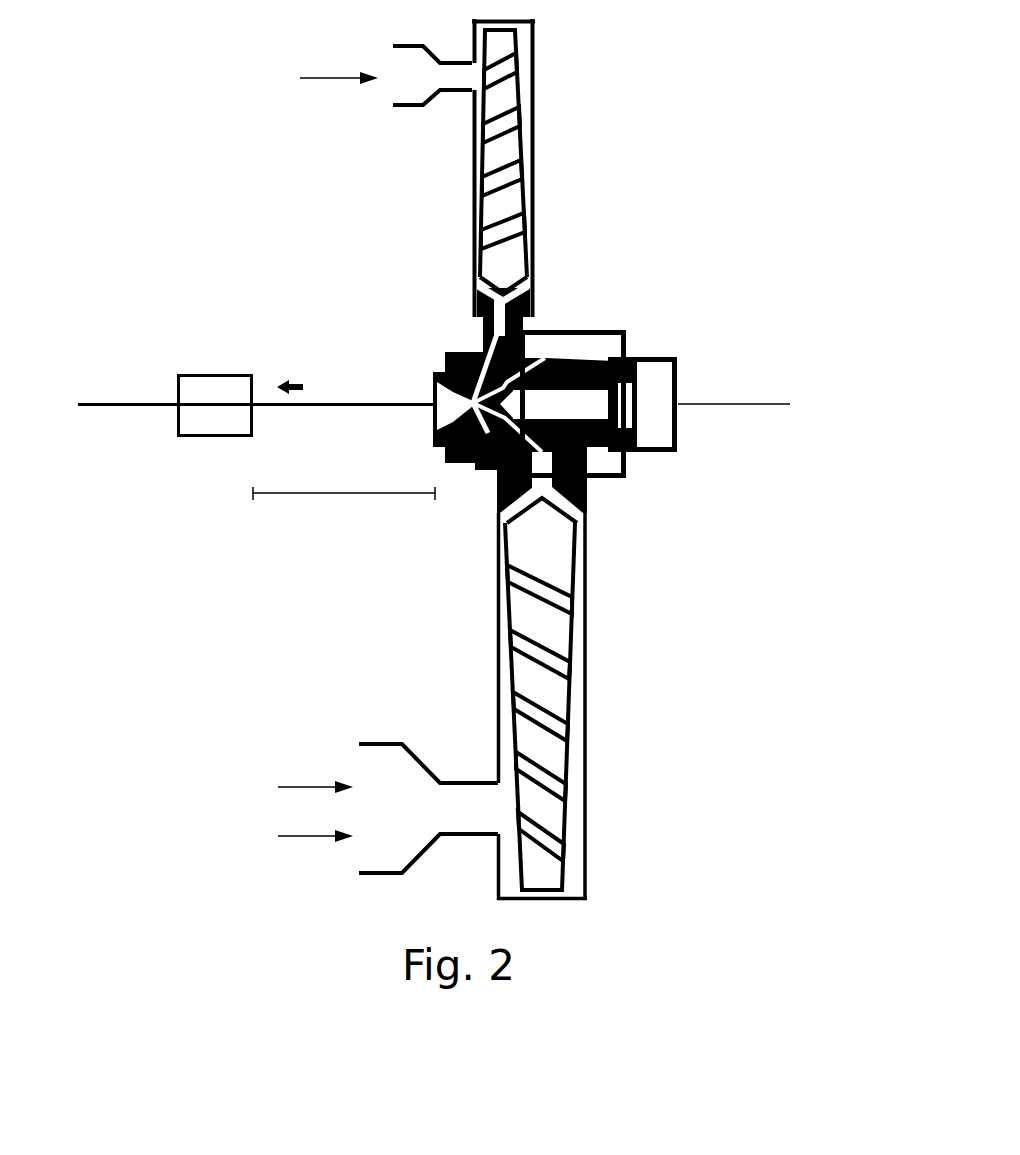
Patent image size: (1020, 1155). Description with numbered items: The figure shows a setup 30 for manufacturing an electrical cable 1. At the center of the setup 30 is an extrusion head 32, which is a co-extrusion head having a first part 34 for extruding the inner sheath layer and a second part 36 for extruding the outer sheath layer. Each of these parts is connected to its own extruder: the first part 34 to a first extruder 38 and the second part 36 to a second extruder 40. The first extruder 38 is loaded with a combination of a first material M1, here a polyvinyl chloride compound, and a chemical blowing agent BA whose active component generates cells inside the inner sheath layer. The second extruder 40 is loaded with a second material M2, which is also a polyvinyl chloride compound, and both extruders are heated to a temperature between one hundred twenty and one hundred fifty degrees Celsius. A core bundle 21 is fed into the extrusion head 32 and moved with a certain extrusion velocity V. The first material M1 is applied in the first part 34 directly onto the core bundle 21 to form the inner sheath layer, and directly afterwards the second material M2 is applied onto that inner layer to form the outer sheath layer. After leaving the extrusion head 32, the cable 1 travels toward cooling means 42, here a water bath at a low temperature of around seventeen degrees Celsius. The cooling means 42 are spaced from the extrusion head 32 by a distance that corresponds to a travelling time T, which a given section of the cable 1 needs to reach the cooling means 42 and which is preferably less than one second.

The cable 1 is at (140, 404).
The core bundle 21 is at (717, 404).
The setup 30 is at (538, 461).
The extrusion head 32 is at (617, 330).
The first part 34 is at (568, 348).
The second part 36 is at (470, 338).
The first extruder 38 is at (587, 776).
The second extruder 40 is at (535, 132).
The cooling means 42 is at (230, 375).
The first material M1 is at (290, 784).
The second material M2 is at (300, 79).
The chemical blowing agent BA is at (290, 838).
The extrusion velocity V is at (298, 381).
The travelling time T is at (340, 495).